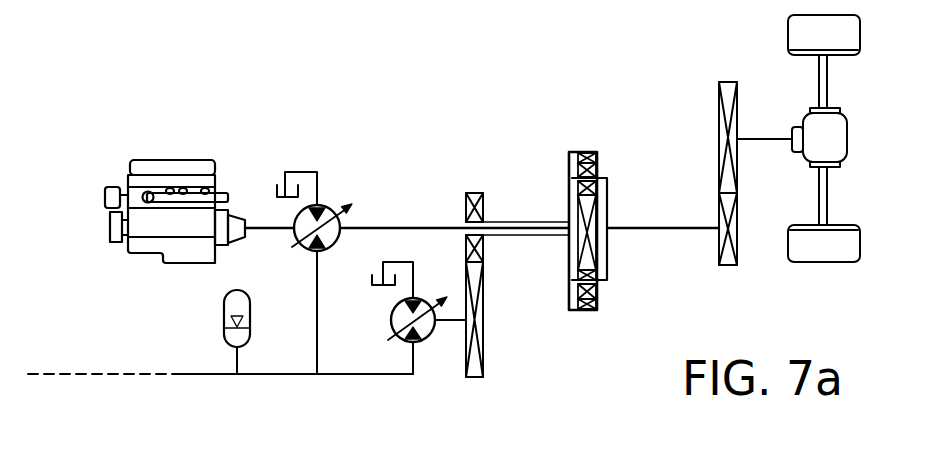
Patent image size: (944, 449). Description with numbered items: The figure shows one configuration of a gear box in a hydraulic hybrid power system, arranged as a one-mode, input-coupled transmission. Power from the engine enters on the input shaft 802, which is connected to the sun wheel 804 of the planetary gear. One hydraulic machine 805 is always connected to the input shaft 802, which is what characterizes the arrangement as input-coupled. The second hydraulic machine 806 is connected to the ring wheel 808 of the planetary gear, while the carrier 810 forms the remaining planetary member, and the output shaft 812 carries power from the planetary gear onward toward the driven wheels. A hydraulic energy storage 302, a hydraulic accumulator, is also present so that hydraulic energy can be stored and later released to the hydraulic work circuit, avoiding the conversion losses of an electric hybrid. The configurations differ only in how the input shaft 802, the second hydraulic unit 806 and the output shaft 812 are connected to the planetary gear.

The hydraulic energy storage 302 is at (223, 310).
The input shaft 802 is at (392, 228).
The sun wheel 804 is at (583, 200).
The hydraulic machine 805 is at (345, 207).
The hydraulic machine 806 is at (432, 338).
The ring wheel 808 is at (569, 295).
The carrier 810 is at (607, 260).
The output shaft 812 is at (668, 228).